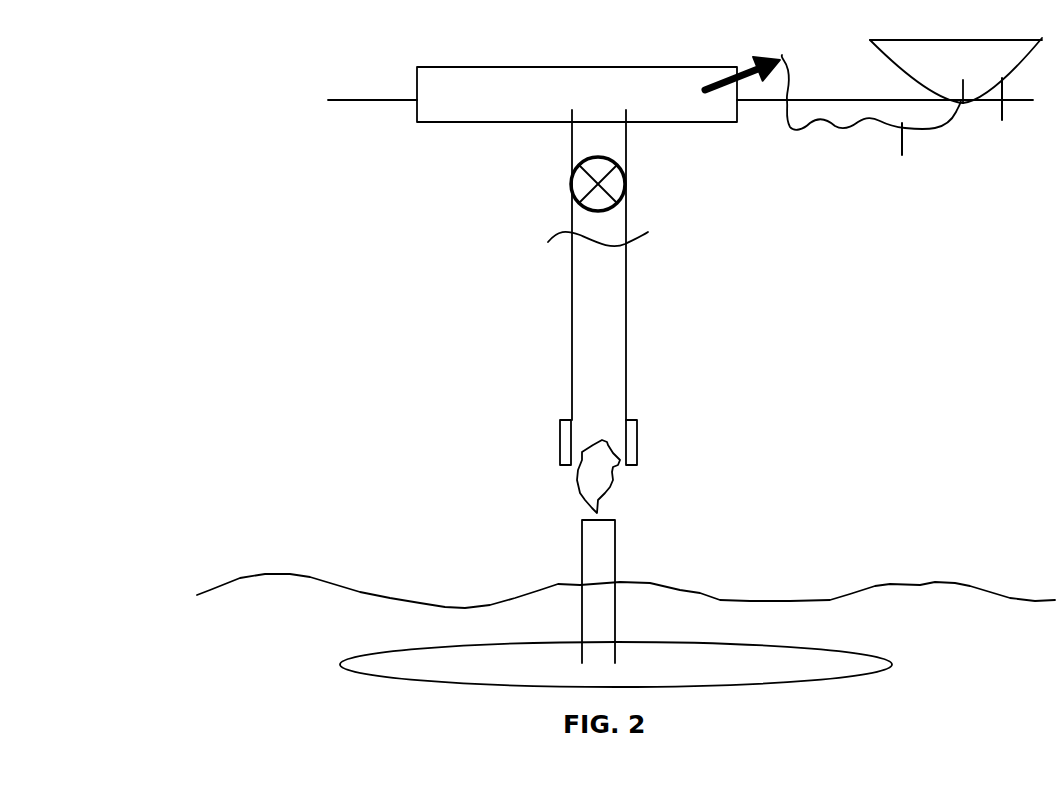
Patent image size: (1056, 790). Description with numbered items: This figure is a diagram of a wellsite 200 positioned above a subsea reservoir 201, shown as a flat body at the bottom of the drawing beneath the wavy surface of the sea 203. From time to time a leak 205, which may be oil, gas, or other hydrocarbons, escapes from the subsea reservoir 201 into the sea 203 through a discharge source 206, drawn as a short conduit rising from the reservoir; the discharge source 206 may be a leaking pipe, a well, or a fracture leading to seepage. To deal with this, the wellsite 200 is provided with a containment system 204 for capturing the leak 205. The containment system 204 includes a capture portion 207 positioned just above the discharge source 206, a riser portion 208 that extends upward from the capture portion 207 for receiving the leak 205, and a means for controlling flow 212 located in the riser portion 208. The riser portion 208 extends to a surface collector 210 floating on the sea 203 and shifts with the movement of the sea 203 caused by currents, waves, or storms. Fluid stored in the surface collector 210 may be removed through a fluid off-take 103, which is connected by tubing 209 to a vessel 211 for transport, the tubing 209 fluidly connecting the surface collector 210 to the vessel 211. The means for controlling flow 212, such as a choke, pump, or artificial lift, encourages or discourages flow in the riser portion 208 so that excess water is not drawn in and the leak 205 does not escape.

The wellsite 200 is at (222, 114).
The subsea reservoir 201 is at (892, 665).
The sea 203 is at (303, 409).
The containment system 204 is at (431, 237).
The leak 205 is at (593, 477).
The discharge source 206 is at (617, 562).
The capture portion 207 is at (658, 426).
The riser portion 208 is at (627, 333).
The tubing 209 is at (871, 121).
The surface collector 210 is at (417, 67).
The vessel 211 is at (956, 96).
The means for controlling flow 212 is at (622, 190).
The fluid off-take 103 is at (766, 61).